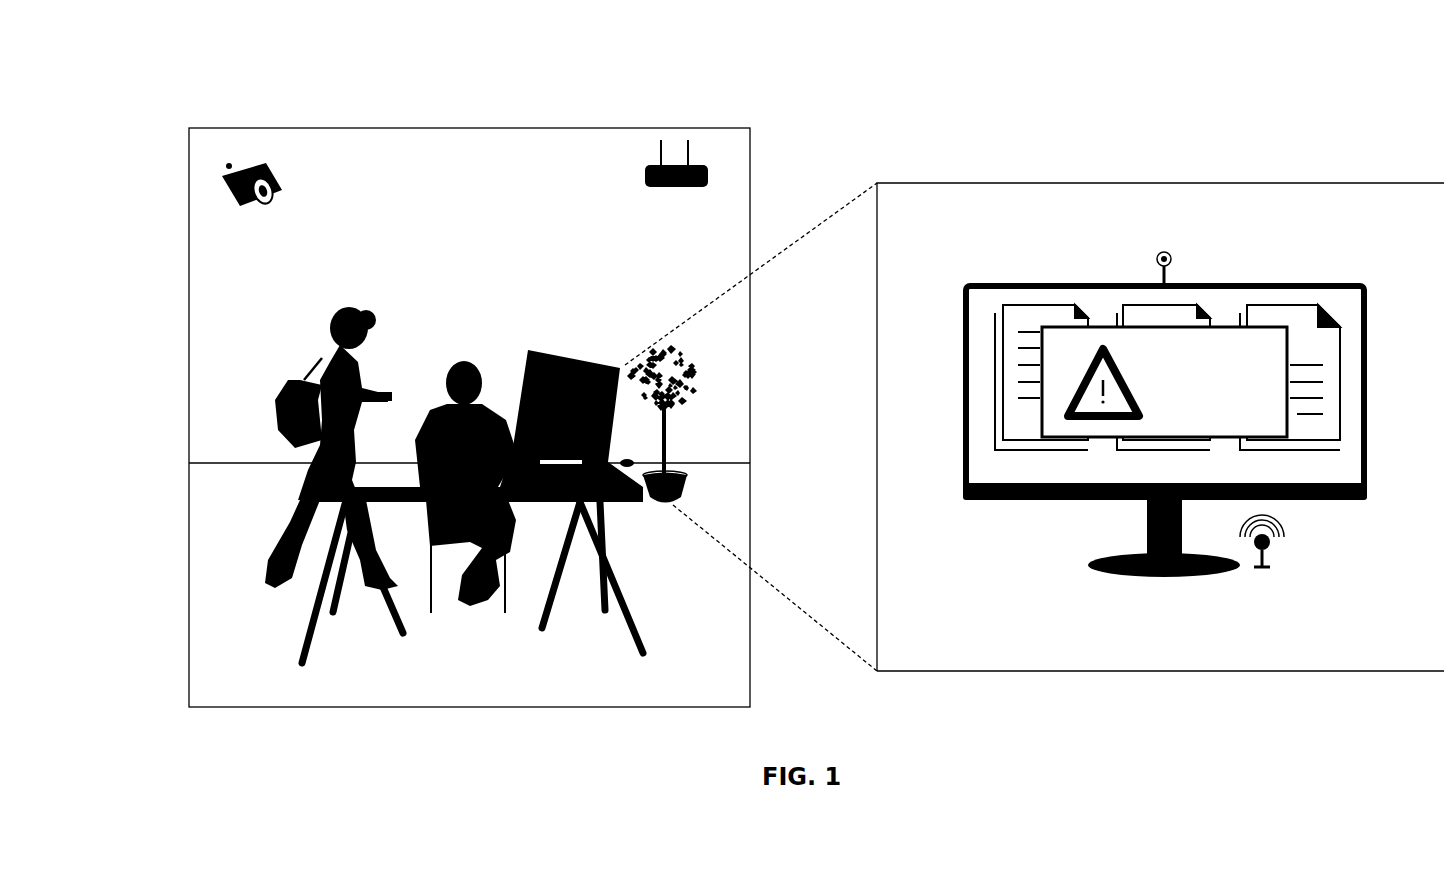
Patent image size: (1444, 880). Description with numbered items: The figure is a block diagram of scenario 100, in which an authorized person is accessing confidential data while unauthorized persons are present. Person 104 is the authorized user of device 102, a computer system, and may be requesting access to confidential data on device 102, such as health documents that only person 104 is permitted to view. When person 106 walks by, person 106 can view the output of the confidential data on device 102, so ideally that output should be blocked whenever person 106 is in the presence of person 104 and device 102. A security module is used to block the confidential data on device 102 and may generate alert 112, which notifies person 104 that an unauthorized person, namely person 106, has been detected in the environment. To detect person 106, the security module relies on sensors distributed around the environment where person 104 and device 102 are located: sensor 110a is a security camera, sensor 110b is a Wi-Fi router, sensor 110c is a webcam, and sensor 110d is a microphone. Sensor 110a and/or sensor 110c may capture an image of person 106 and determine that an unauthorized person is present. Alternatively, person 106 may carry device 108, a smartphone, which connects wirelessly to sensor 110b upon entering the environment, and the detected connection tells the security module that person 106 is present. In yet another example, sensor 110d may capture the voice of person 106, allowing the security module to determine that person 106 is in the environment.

The scenario 100 is at (828, 61).
The device 102 is at (941, 352).
The person 104 is at (460, 358).
The person 106 is at (316, 378).
The device 108 is at (388, 394).
The sensor 110a is at (220, 182).
The sensor 110b is at (658, 164).
The sensor 110c is at (1160, 253).
The sensor 110d is at (1270, 548).
The alert 112 is at (1228, 367).